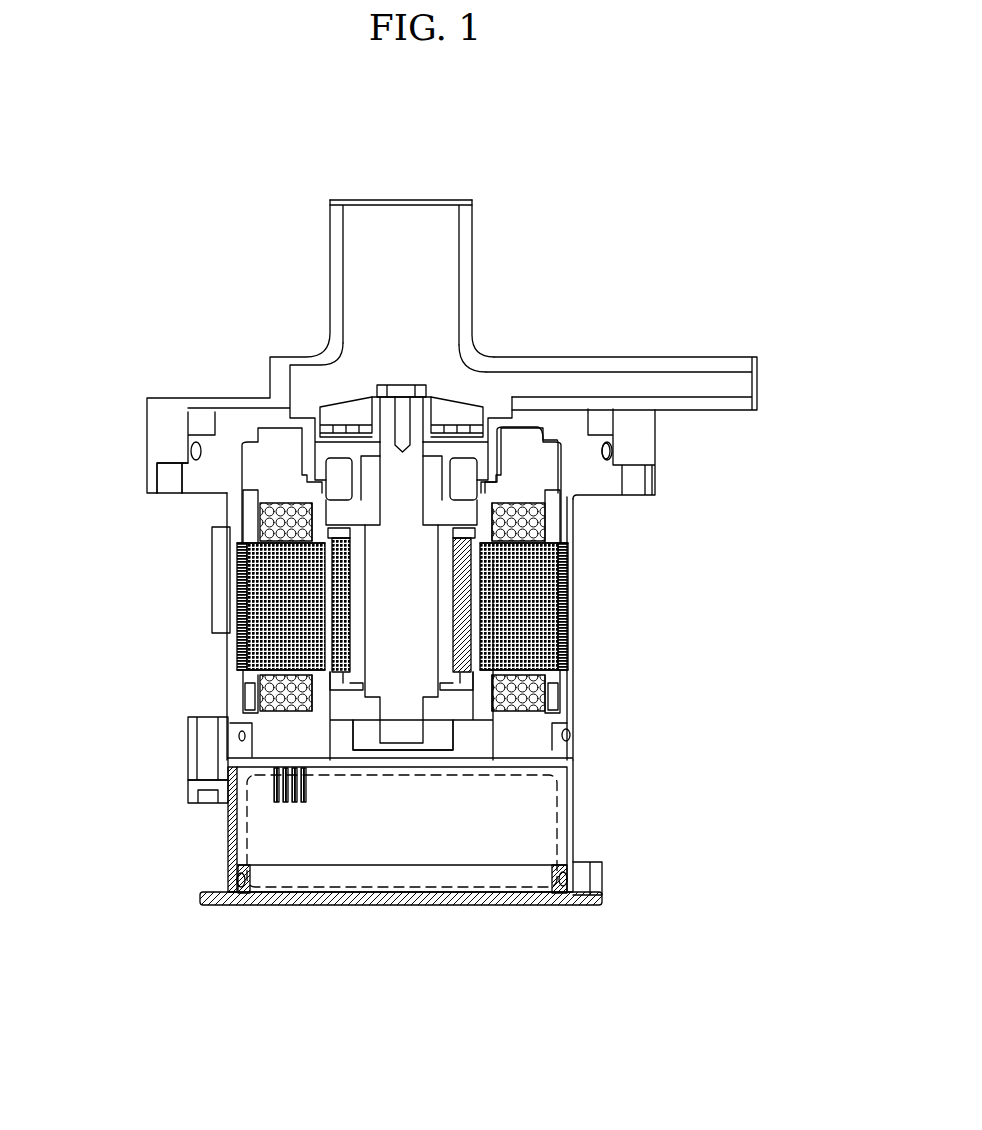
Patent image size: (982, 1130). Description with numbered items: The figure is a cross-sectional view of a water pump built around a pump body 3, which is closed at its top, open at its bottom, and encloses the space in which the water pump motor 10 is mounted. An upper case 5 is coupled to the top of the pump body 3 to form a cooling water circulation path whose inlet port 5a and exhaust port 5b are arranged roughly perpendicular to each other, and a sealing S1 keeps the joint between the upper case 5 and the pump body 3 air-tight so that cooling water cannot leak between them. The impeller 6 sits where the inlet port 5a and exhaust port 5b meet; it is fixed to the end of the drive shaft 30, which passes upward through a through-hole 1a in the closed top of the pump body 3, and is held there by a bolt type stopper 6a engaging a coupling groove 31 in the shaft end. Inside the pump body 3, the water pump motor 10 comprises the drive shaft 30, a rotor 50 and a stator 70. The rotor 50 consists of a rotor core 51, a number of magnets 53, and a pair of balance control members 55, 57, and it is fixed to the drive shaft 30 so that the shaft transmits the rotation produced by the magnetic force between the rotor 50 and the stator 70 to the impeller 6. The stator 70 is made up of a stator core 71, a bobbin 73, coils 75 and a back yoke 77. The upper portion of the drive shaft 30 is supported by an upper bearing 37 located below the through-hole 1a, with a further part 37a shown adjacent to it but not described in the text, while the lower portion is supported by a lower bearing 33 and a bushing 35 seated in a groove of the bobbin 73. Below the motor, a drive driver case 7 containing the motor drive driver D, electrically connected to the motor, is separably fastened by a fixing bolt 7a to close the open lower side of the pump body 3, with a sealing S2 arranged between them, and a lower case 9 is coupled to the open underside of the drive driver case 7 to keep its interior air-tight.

The through-hole 1a is at (372, 468).
The pump body 3 is at (207, 497).
The upper case 5 is at (163, 423).
The inlet port 5a is at (403, 213).
The exhaust port 5b is at (748, 384).
The impeller 6 is at (350, 410).
The bolt type stopper 6a is at (387, 384).
The drive driver case 7 is at (237, 829).
The fixing bolt 7a is at (190, 789).
The lower case 9 is at (252, 904).
The water pump motor 10 is at (528, 463).
The drive shaft 30 is at (415, 480).
The coupling groove 31 is at (444, 404).
The lower bearing 33 is at (362, 728).
The bushing 35 is at (385, 745).
The upper bearing 37 is at (362, 484).
The bearing bracket 37a is at (343, 470).
The rotor 50 is at (589, 601).
The rotor core 51 is at (462, 567).
The magnets 53 is at (467, 612).
The balance control member 55 is at (476, 533).
The balance control member 57 is at (467, 684).
The stator 70 is at (191, 601).
The stator core 71 is at (255, 610).
The bobbin 73 is at (215, 675).
The coils 75 is at (273, 521).
The back yoke 77 is at (240, 571).
The motor drive driver D is at (574, 806).
The sealing S1 is at (611, 447).
The sealing S2 is at (569, 735).